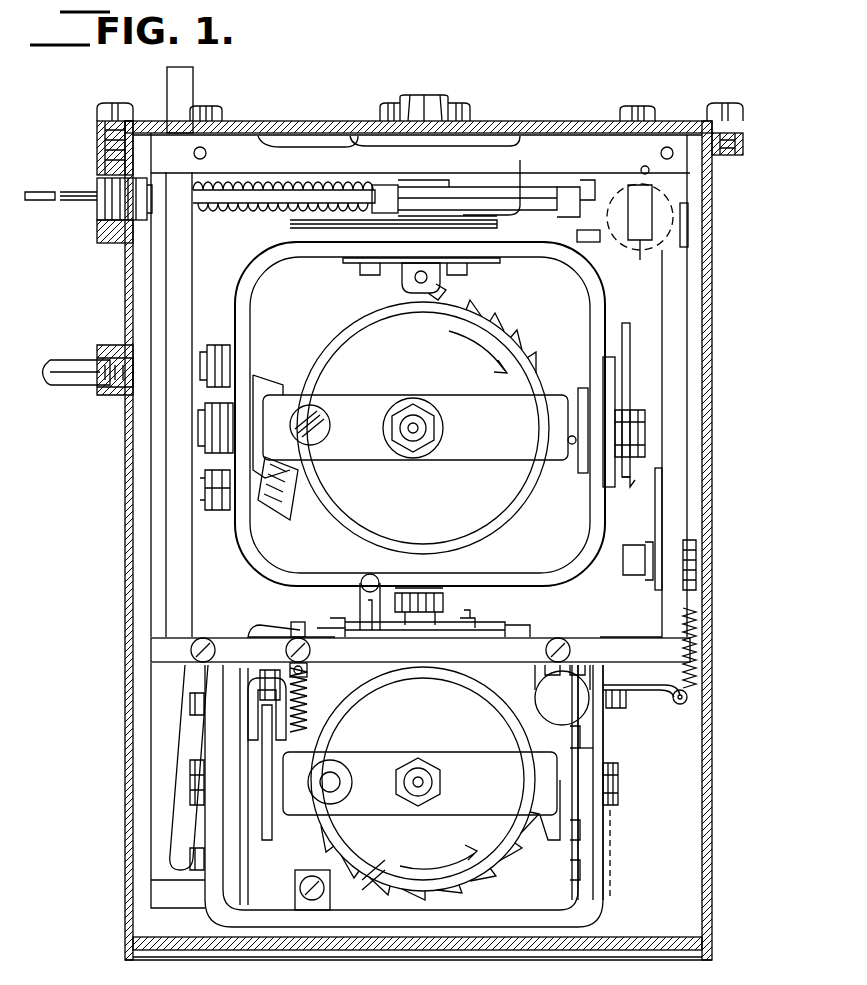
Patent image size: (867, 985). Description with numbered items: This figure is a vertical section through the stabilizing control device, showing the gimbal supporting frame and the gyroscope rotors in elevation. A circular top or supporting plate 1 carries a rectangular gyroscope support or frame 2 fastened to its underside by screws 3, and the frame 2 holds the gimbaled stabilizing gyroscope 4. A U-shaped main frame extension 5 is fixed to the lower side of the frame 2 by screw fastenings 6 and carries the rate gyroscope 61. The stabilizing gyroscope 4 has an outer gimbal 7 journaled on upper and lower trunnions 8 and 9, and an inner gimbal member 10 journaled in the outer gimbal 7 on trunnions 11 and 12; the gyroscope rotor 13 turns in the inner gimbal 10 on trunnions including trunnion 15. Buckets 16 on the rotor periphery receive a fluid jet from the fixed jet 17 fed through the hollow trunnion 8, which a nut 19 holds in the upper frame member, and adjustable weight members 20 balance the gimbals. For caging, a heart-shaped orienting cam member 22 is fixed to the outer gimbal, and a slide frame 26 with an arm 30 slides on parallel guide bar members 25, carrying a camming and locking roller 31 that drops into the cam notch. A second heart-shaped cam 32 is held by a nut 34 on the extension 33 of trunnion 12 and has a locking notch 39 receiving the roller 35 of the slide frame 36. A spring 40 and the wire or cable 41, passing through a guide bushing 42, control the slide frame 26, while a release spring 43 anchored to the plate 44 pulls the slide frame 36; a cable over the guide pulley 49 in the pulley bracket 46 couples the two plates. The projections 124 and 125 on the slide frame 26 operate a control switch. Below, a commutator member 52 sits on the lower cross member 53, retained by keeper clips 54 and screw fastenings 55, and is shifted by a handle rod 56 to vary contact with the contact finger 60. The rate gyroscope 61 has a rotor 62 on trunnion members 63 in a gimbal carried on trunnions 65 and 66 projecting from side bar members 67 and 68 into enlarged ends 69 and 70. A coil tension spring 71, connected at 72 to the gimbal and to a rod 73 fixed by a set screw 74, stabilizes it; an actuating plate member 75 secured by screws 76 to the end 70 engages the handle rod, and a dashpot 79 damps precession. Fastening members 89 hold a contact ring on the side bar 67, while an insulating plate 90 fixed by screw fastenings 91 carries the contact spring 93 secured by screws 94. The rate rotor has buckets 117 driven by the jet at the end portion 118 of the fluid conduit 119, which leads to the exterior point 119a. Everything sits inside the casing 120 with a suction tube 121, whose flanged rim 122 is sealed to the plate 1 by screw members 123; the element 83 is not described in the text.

The circular top or supporting plate 1 is at (322, 135).
The rectangular gyroscope support or frame 2 is at (245, 140).
The screws 3 is at (214, 106).
The gimbaled stabilizing gyroscope 4 is at (52, 182).
The U-shaped open frame or main frame extension 5 is at (75, 422).
The screw fastenings 6 is at (103, 607).
The outer gimbal 7 is at (103, 658).
The upper journal or trunnion 8 is at (418, 182).
The lower journal or trunnion 9 is at (430, 580).
The inner gimbal member 10 is at (440, 462).
The trunnion 11 is at (262, 385).
The trunnion 12 is at (572, 400).
The gyroscope rotor 13 is at (360, 340).
The trunnion 15 is at (414, 415).
The air pockets or buckets 16 is at (485, 333).
The fixed jet 17 is at (445, 298).
The nut 19 is at (395, 85).
The adjustable weight members 20 is at (222, 336).
The heart-shaped orienting cam member 22 is at (497, 226).
The parallel guide bar members 25 is at (248, 215).
The outer gimbal orienting and release means 26 is at (464, 190).
The arm 30 is at (312, 890).
The camming and locking roller 31 is at (577, 234).
The heart-shaped orienting cam member 32 is at (648, 318).
The extension 33 is at (620, 400).
The nut 34 is at (630, 412).
The roller 35 is at (623, 560).
The slide frame 36 is at (655, 518).
The locking notch 39 is at (629, 488).
The spring 40 is at (228, 215).
The wire or cable 41 is at (75, 205).
The guide bushing 42 is at (97, 210).
The release spring 43 is at (698, 634).
The plate 44 is at (688, 697).
The pulley bracket 46 is at (673, 232).
The guide pulley 49 is at (640, 235).
The stabilizing circuit-controlling commutator member 52 is at (427, 638).
The lower cross member 53 is at (268, 612).
The keeper members or clips 54 is at (420, 615).
The screw fastenings 55 is at (406, 608).
The handle rod 56 is at (520, 632).
The contact finger 60 is at (380, 578).
The rate gyroscope 61 is at (485, 760).
The rate gyroscope rotor 62 is at (380, 700).
The trunnion members 63 is at (418, 770).
The bearing member or trunnion 65 is at (258, 780).
The bearing member or trunnion 66 is at (619, 778).
The side bar member 67 is at (210, 820).
The side bar member 68 is at (603, 823).
The enlarged end 69 is at (316, 782).
The enlarged end 70 is at (558, 810).
The coil tension spring 71 is at (310, 690).
The spring connection 72 is at (308, 712).
The rod 73 is at (298, 622).
The set screw 74 is at (311, 650).
The actuating plate member 75 is at (578, 758).
The screws 76 is at (582, 735).
The dashpot 79 is at (550, 700).
The screw 83 is at (568, 645).
The fastening members 89 is at (192, 700).
The insulating plate 90 is at (270, 762).
The screw fastenings 91 is at (262, 735).
The contact strip or spring 93 is at (160, 715).
The screws 94 is at (216, 650).
The buckets 117 is at (450, 890).
The end portion of fluid conduit 118 is at (382, 875).
The fluid conduit 119 is at (178, 282).
The point 119a is at (193, 78).
The casing or air tight closure 120 is at (712, 527).
The suction tube 121 is at (80, 355).
The flanged rim 122 is at (743, 140).
The screw members 123 is at (138, 94).
The projection 124 is at (529, 183).
The projection 125 is at (384, 192).